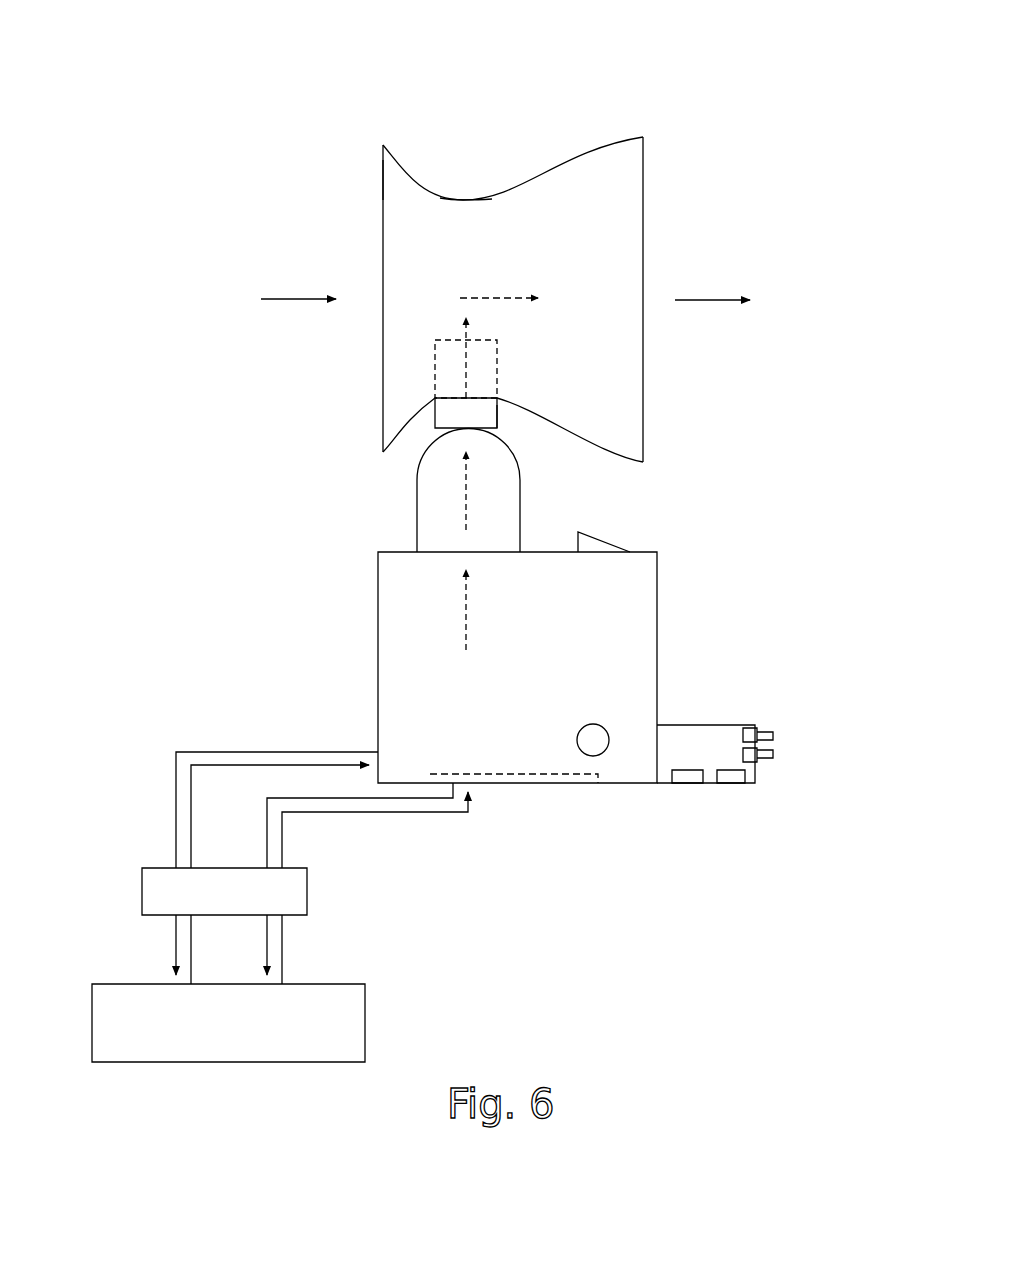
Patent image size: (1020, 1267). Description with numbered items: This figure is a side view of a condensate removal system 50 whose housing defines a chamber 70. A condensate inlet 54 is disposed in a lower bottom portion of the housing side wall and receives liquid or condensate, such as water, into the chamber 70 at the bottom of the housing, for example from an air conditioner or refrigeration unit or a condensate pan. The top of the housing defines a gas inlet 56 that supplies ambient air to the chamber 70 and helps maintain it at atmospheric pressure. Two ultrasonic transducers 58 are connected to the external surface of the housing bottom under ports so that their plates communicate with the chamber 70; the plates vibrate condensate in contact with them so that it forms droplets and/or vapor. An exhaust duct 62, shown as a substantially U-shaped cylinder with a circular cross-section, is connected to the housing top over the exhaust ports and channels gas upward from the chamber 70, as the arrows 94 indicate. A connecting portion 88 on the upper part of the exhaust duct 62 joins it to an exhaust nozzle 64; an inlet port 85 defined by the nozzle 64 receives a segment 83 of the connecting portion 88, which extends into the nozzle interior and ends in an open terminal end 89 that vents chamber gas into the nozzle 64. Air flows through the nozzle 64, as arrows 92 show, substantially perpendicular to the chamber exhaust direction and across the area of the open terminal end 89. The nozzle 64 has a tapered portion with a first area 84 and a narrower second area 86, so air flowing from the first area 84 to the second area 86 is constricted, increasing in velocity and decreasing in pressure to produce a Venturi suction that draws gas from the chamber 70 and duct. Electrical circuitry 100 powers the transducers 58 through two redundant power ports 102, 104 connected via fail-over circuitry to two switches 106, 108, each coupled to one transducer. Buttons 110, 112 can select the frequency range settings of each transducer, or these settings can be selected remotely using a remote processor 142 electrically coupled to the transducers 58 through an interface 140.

The condensate removal system 50 is at (318, 90).
The exhaust nozzle 64 is at (600, 137).
The first area of tapered portion 84 is at (383, 182).
The second area of tapered portion 86 is at (492, 210).
The arrows showing nozzle air flow 92 is at (497, 298).
The open terminal end 89 is at (448, 340).
The segment of connecting portion 83 is at (432, 340).
The arrows showing chamber air flow 94 is at (467, 360).
The inlet port 85 is at (497, 398).
The connecting portion 88 is at (497, 416).
The exhaust duct 62 is at (435, 492).
The gas inlet 56 is at (600, 540).
The chamber 70 is at (378, 660).
The ultrasonic transducers 58 is at (503, 783).
The condensate inlet 54 is at (604, 753).
The electrical circuitry 100 is at (683, 725).
The power port 102 is at (688, 783).
The power port 104 is at (735, 783).
The switch 106 is at (743, 735).
The switch 108 is at (743, 755).
The button 112 is at (773, 736).
The button 110 is at (773, 754).
The interface 140 is at (307, 882).
The remote processor 142 is at (365, 1010).